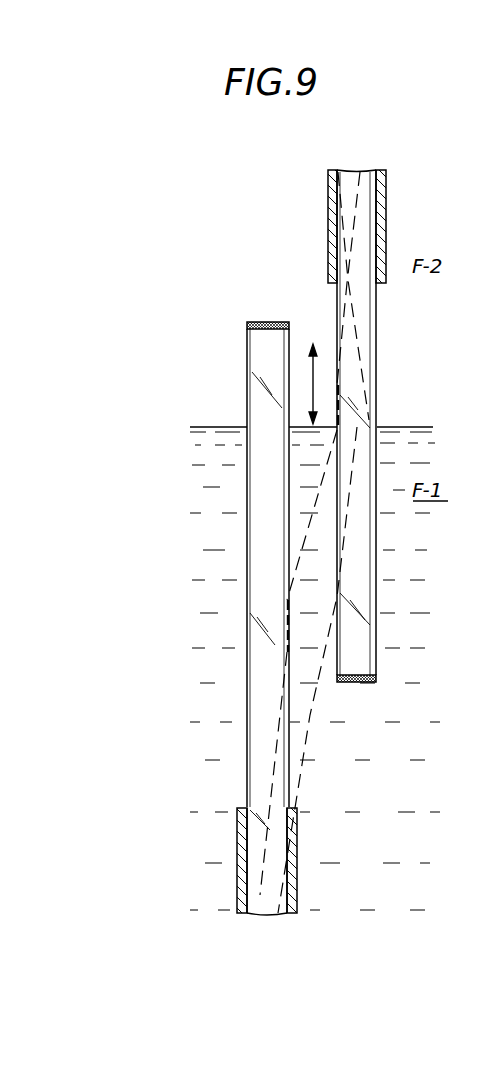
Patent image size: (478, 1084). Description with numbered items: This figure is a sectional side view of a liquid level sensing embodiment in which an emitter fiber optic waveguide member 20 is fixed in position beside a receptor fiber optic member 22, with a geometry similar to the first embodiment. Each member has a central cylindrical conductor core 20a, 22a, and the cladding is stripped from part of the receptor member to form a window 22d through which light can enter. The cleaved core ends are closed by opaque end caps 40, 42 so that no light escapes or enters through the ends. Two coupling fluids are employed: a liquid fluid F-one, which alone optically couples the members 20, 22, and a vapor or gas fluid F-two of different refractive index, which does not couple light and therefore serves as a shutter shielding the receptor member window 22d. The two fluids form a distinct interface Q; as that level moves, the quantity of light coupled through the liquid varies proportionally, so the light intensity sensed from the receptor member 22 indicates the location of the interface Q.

The emitter fiber optic waveguide member 20 is at (372, 344).
The central cylindrical conductor core 20a is at (386, 218).
The receptor fiber optic member 22 is at (262, 377).
The central cylindrical conductor core 22a is at (237, 850).
The receptor member window 22d is at (247, 690).
The opaque end cap 40 is at (355, 683).
The opaque end cap 42 is at (267, 321).
The fluid interface Q is at (406, 427).